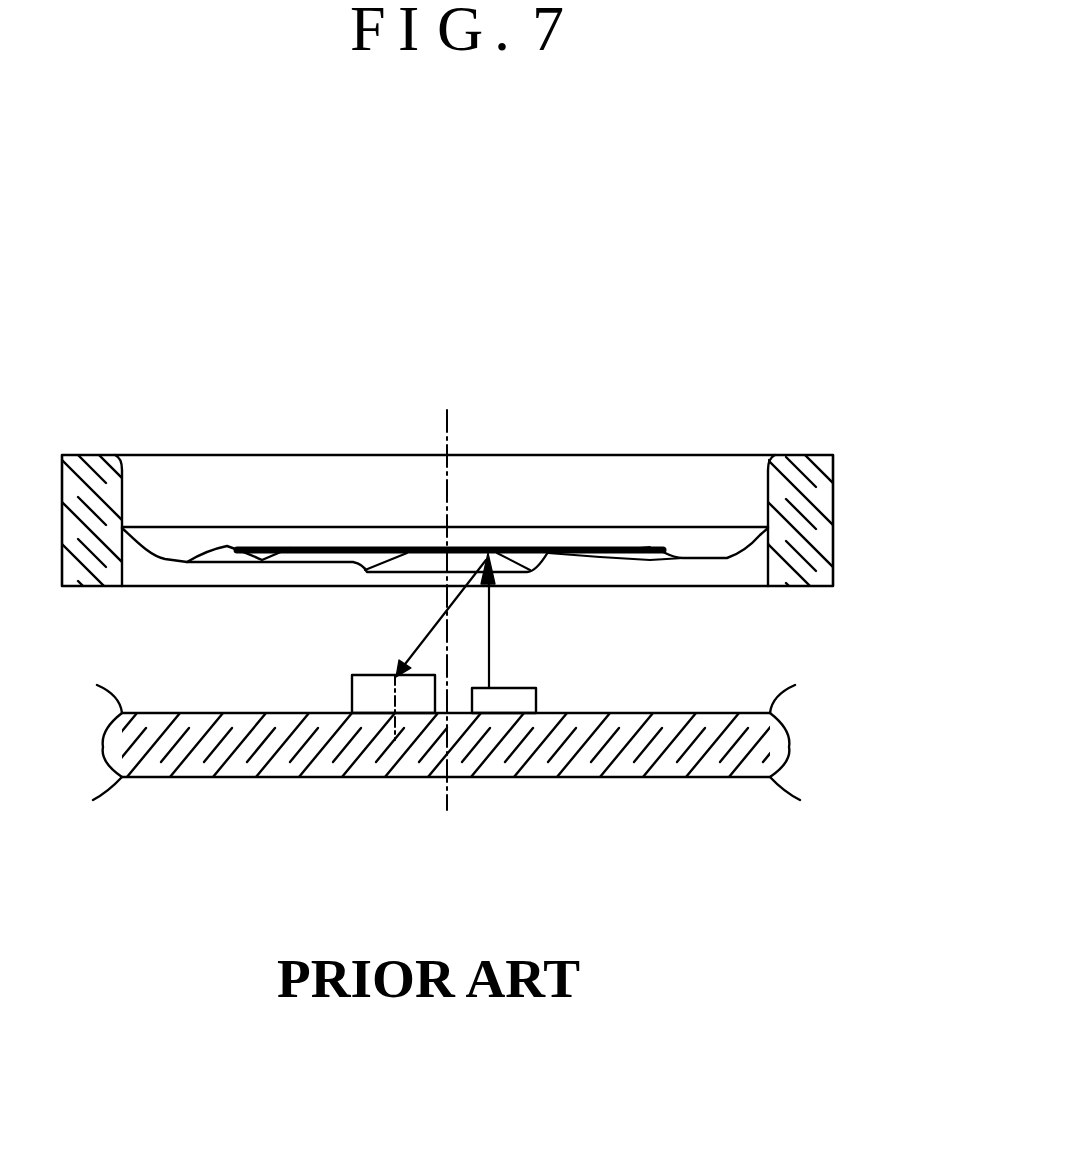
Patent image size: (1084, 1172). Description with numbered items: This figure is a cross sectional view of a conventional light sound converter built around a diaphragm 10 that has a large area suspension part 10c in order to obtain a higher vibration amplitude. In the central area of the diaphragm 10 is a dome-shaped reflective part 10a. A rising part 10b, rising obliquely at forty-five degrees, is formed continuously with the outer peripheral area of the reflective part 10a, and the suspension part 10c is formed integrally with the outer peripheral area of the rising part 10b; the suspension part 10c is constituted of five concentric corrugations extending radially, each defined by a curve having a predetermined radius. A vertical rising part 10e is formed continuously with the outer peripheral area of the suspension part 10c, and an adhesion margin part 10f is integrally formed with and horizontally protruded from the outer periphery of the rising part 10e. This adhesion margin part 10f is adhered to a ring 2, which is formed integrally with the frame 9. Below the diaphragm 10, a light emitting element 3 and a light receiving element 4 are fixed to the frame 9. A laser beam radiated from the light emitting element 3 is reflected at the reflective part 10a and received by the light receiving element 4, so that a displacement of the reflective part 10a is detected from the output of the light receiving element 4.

The ring 2 is at (830, 537).
The light emitting element 3 is at (507, 703).
The light receiving element 4 is at (373, 697).
The frame 9 is at (703, 777).
The diaphragm 10 is at (178, 521).
The reflective part 10a is at (405, 550).
The rising part 10b is at (510, 547).
The suspension part 10c is at (660, 545).
The vertical rising part 10e is at (767, 498).
The adhesion margin part 10f is at (797, 455).